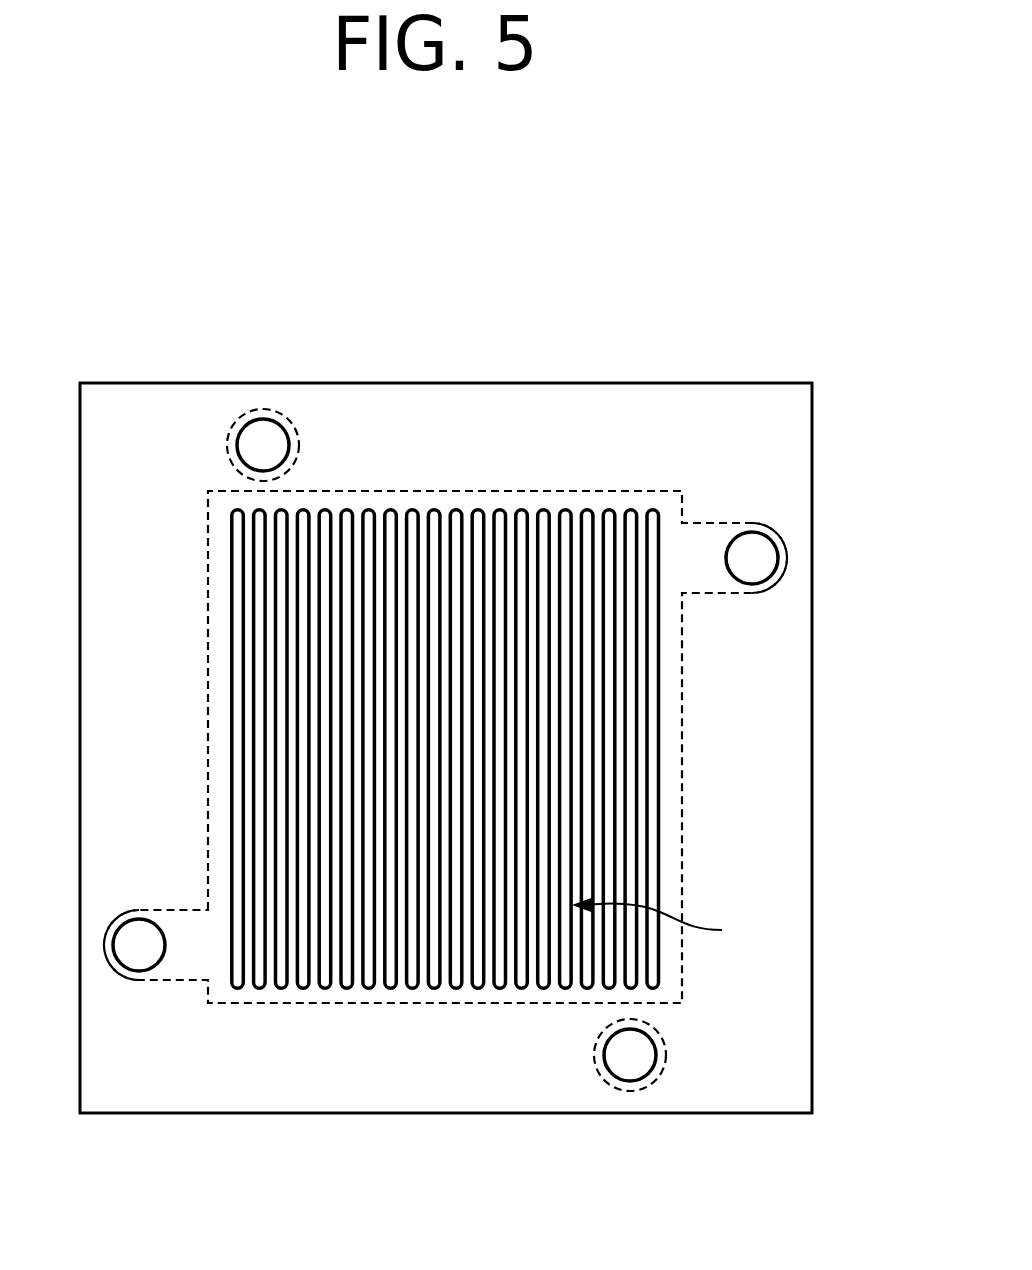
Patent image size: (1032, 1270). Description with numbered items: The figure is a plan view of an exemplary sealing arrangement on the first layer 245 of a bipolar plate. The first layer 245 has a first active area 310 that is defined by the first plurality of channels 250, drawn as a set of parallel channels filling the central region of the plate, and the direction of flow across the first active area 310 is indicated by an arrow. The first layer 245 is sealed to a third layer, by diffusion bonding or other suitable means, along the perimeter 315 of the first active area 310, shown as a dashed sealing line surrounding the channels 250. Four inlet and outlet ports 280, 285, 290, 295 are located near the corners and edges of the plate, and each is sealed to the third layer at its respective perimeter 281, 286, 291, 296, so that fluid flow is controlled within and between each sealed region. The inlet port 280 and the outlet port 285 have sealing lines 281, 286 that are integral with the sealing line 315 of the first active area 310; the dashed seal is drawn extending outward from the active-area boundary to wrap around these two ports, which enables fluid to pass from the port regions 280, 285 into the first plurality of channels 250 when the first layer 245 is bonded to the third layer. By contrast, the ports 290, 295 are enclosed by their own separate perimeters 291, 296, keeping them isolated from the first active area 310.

The first layer 245 is at (112, 245).
The first plurality of channels 250 is at (660, 768).
The inlet port 280 is at (128, 943).
The sealing line 281 is at (125, 980).
The outlet port 285 is at (764, 546).
The sealing line 286 is at (740, 522).
The port 290 is at (614, 1072).
The perimeter 291 is at (596, 1062).
The port 295 is at (286, 446).
The perimeter 296 is at (232, 424).
The first active area 310 is at (677, 924).
The perimeter 315 is at (208, 705).